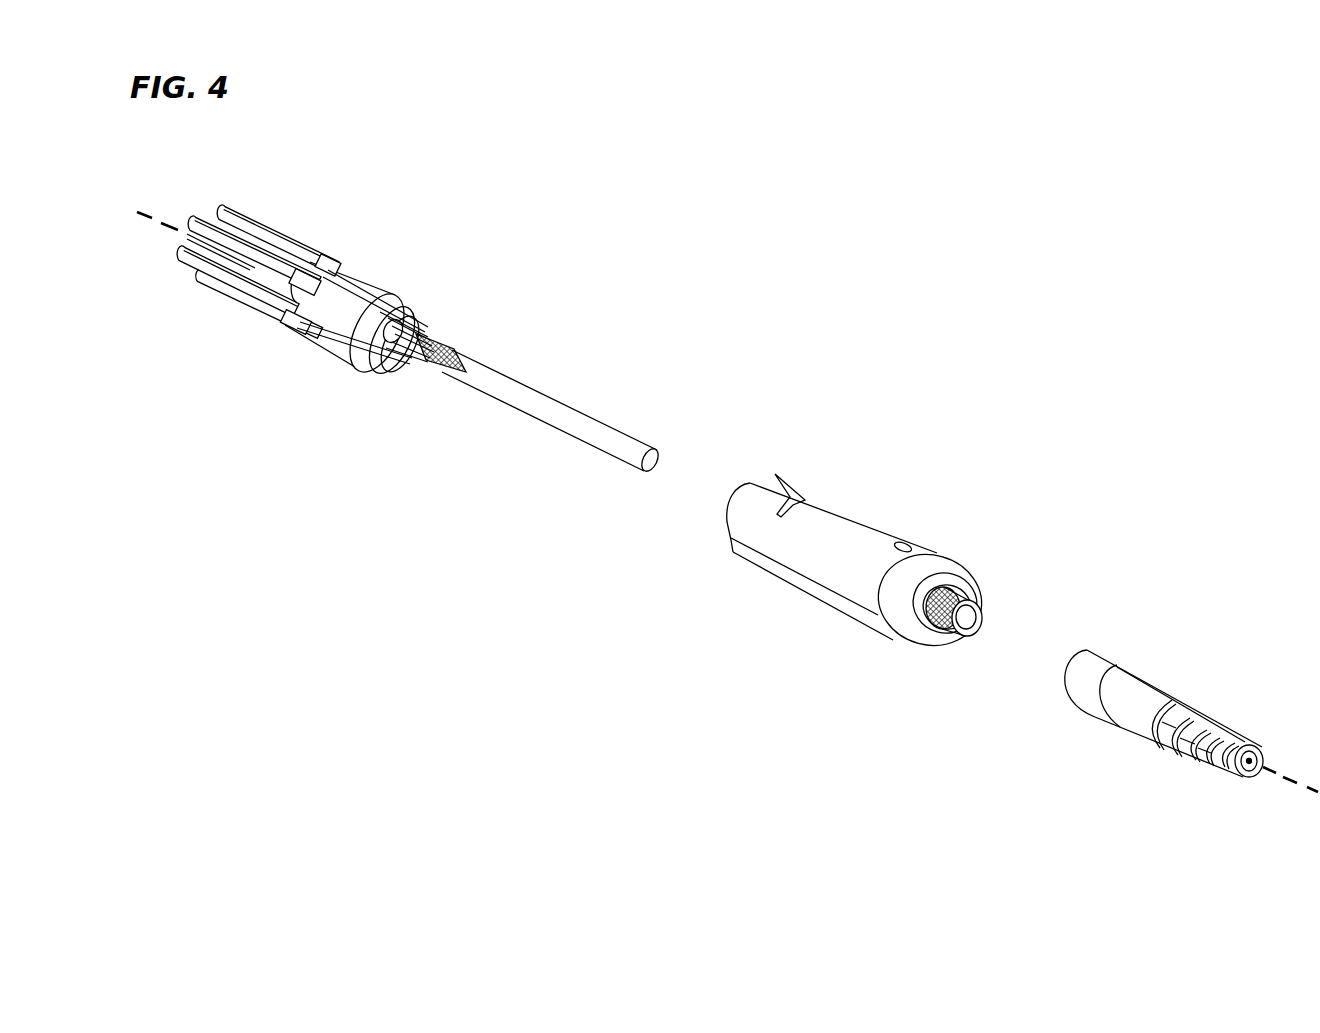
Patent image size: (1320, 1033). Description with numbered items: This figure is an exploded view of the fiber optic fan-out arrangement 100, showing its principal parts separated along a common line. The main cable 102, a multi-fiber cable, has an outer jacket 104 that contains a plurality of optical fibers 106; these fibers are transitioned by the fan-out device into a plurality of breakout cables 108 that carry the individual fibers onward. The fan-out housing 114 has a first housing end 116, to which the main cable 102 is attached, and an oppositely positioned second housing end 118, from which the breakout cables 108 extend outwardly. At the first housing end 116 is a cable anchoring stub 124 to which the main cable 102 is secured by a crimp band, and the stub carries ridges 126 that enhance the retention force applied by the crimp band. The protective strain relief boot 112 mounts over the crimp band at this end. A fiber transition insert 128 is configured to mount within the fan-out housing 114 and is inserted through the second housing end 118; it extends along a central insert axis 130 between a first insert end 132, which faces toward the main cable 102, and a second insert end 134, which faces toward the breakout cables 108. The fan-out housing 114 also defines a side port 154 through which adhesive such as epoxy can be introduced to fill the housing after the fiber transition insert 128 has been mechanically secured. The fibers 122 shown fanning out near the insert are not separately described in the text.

The fiber optic fan-out arrangement 100 is at (873, 478).
The main cable 102 is at (553, 412).
The outer jacket 104 is at (560, 426).
The optical fibers 106 is at (458, 333).
The breakout cables 108 is at (213, 302).
The protective strain relief boot 112 is at (1162, 672).
The fan-out housing 114 is at (873, 589).
The first housing end 116 is at (923, 643).
The second housing end 118 is at (722, 553).
The wires 122 is at (420, 328).
The cable anchoring stub 124 is at (985, 580).
The ridges 126 is at (948, 632).
The fiber transition insert 128 is at (330, 357).
The central insert axis 130 is at (143, 216).
The first insert end 132 is at (390, 385).
The second insert end 134 is at (278, 335).
The side port 154 is at (907, 548).